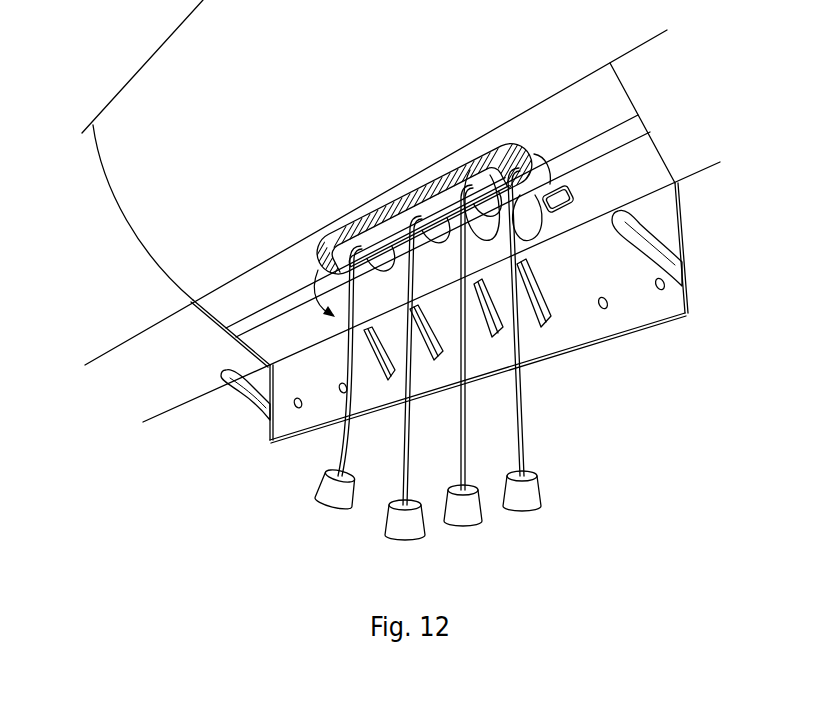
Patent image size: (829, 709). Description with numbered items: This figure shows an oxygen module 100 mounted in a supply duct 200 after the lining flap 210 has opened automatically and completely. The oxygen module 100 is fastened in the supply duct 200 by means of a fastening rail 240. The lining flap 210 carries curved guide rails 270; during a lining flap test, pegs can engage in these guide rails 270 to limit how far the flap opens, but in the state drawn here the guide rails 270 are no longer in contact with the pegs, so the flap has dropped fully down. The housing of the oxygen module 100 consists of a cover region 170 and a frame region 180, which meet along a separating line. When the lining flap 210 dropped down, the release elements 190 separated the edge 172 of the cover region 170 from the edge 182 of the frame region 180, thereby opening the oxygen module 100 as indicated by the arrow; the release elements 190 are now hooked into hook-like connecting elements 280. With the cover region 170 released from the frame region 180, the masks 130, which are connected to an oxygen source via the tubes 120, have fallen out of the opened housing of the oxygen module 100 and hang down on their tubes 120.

The oxygen module 100 is at (392, 182).
The tubes 120 is at (519, 423).
The masks 130 is at (530, 497).
The cover region 170 is at (492, 233).
The edge of the cover region 172 is at (365, 307).
The frame region 180 is at (533, 140).
The edge of the frame region 182 is at (437, 177).
The release element 190 is at (543, 297).
The supply duct 200 is at (258, 300).
The lining flap 210 is at (642, 307).
The fastening rail 240 is at (623, 132).
The guide rails 270 is at (650, 226).
The hook-like connecting elements 280 is at (673, 289).